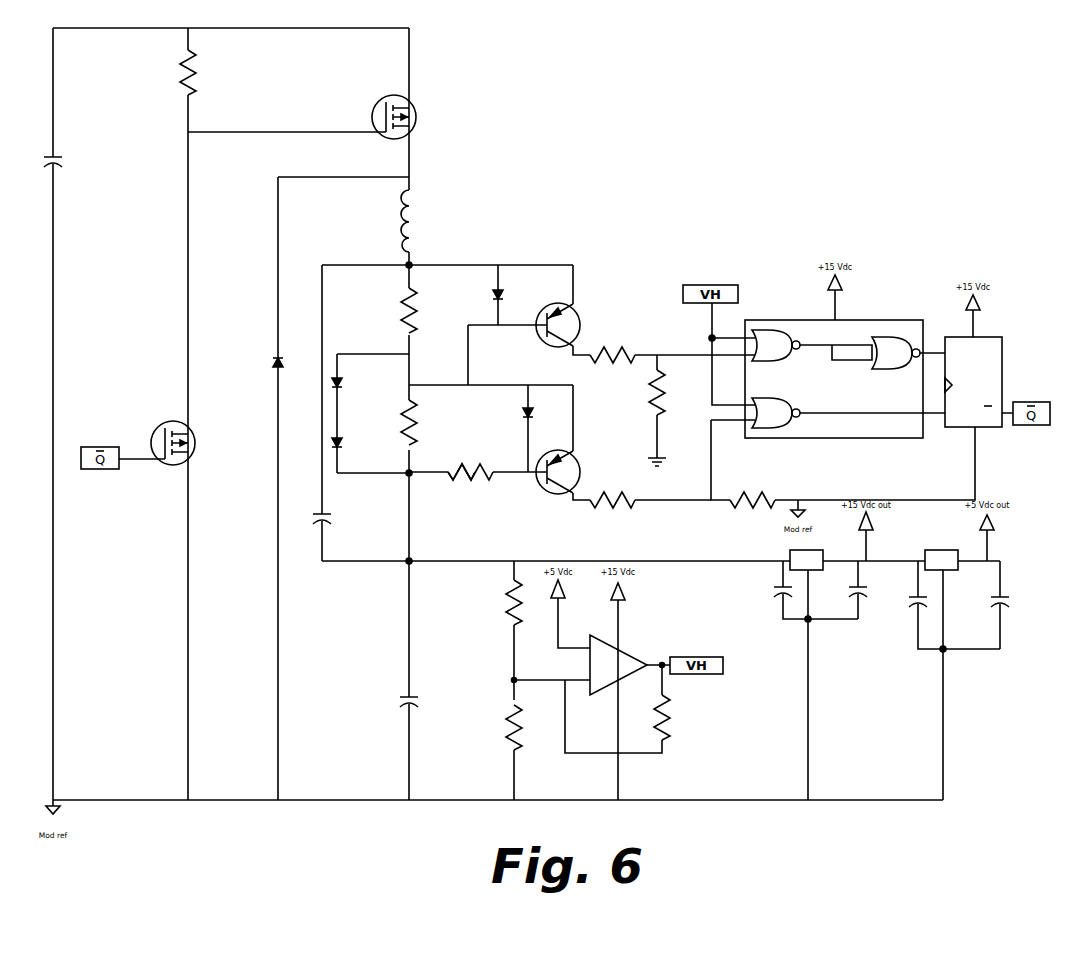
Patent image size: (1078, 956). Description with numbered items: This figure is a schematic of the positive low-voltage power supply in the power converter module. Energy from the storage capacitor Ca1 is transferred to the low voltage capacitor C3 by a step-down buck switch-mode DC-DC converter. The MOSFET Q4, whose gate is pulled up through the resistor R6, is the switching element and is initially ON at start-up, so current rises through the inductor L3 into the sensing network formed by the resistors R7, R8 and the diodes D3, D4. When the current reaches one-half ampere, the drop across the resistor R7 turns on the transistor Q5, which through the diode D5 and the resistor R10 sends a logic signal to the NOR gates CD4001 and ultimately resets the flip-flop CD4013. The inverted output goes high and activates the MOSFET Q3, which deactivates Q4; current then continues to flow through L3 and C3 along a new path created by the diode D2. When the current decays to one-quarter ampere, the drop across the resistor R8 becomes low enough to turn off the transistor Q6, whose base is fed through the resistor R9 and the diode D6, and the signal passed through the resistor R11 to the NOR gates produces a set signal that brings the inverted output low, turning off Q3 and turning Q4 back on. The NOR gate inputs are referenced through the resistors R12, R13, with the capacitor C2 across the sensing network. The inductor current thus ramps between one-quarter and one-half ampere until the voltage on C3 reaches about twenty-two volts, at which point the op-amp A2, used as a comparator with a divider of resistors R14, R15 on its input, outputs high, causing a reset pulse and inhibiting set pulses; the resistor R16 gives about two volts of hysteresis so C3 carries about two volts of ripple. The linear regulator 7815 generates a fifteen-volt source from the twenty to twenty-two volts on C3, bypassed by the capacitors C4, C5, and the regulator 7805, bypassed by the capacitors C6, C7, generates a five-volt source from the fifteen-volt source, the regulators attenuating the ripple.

The storage capacitor Ca1 is at (40, 161).
The resistor 100 kΩ R6 is at (193, 72).
The MOSFET Q4 is at (410, 104).
The inductor L3 is at (431, 221).
The diode D2 is at (254, 352).
The MOSFET Q3 is at (189, 437).
The diode 1N5626 D3 is at (362, 374).
The diode 1N5626 D4 is at (362, 435).
The resistor R7 is at (405, 310).
The resistor R8 is at (422, 422).
The resistor 10 kΩ R9 is at (470, 473).
The diode 1N4148 D5 is at (474, 287).
The diode 1N4148 D6 is at (501, 409).
The transistor Q5 is at (576, 319).
The transistor Q6 is at (576, 467).
The resistor 20 kΩ R10 is at (612, 355).
The resistor 20 kΩ R11 is at (612, 501).
The resistor 100 kΩ R12 is at (662, 392).
The resistor 100 kΩ R13 is at (752, 501).
The capacitor 10 nF C2 is at (308, 516).
The low voltage capacitor C3 is at (410, 698).
The resistor 15 kΩ R14 is at (514, 602).
The resistor 4.3 kΩ R15 is at (514, 727).
The op-amp A2 is at (618, 665).
The resistor R16 is at (680, 717).
The capacitor 0.33 µF C4 is at (765, 584).
The capacitor 0.1 µF C5 is at (842, 594).
The capacitor 0.33 µF C6 is at (900, 594).
The capacitor 0.1 µF C7 is at (985, 607).
The NOR gates CD4001 is at (834, 379).
The flip-flop CD4013 is at (973, 382).
The linear 15-volt regulator 7815 is at (806, 560).
The 5-volt regulator 7805 is at (941, 560).